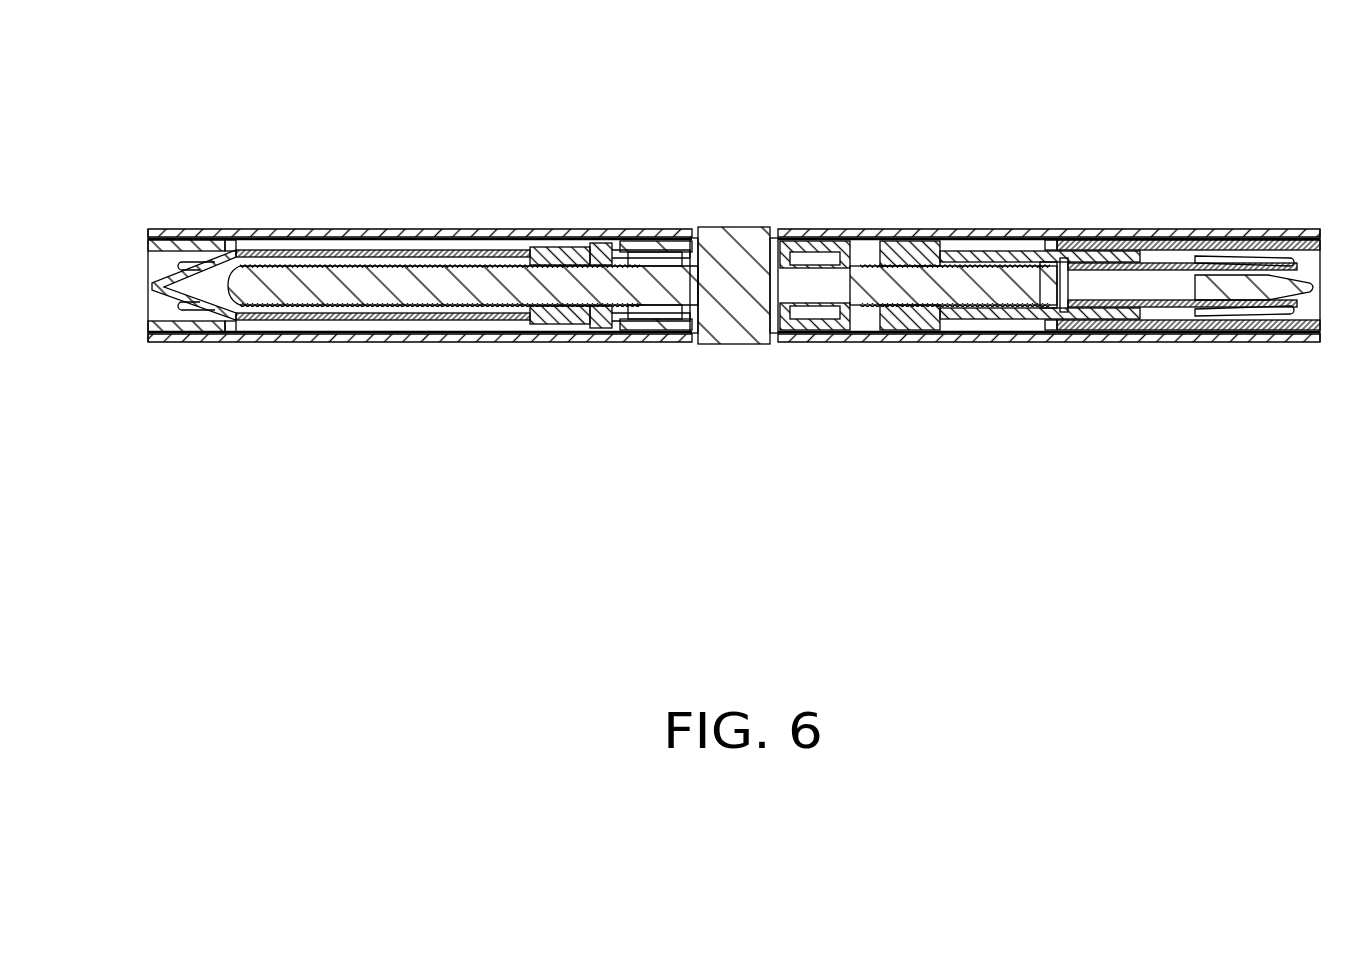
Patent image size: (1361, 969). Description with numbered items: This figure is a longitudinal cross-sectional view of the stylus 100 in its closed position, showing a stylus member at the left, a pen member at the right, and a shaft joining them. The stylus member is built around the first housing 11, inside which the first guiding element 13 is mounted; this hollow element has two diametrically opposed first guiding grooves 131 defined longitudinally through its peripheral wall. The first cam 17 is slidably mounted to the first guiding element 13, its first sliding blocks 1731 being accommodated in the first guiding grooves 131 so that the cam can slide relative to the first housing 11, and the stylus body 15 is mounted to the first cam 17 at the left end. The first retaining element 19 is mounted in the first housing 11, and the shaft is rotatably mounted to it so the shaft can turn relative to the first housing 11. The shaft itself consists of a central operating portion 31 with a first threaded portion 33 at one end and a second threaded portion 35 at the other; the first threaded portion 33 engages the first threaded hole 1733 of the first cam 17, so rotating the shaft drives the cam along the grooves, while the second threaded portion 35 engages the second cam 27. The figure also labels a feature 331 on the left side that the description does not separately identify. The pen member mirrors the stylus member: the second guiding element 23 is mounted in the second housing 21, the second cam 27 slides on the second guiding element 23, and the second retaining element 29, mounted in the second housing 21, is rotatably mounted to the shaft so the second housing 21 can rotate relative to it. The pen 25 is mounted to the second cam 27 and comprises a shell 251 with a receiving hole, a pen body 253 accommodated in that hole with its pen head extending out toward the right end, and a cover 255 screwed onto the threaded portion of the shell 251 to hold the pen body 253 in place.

The stylus 100 is at (808, 105).
The first housing 11 is at (316, 237).
The first guiding element 13 is at (200, 240).
The first guiding grooves 131 is at (390, 248).
The stylus body 15 is at (253, 334).
The first cam 17 is at (598, 243).
The first sliding blocks 1731 is at (540, 247).
The first threaded hole 1733 is at (555, 324).
The first retaining element 19 is at (668, 241).
The second housing 21 is at (1091, 237).
The second guiding element 23 is at (1260, 240).
The pen 25 is at (1126, 367).
The shell 251 is at (1112, 340).
The pen body 253 is at (1254, 346).
The cover 255 is at (1215, 318).
The second cam 27 is at (896, 241).
The second retaining element 29 is at (803, 241).
The operating portion 31 is at (728, 262).
The first threaded portion 33 is at (352, 288).
The sleeve bottom wall 331 is at (466, 313).
The second threaded portion 35 is at (1022, 295).